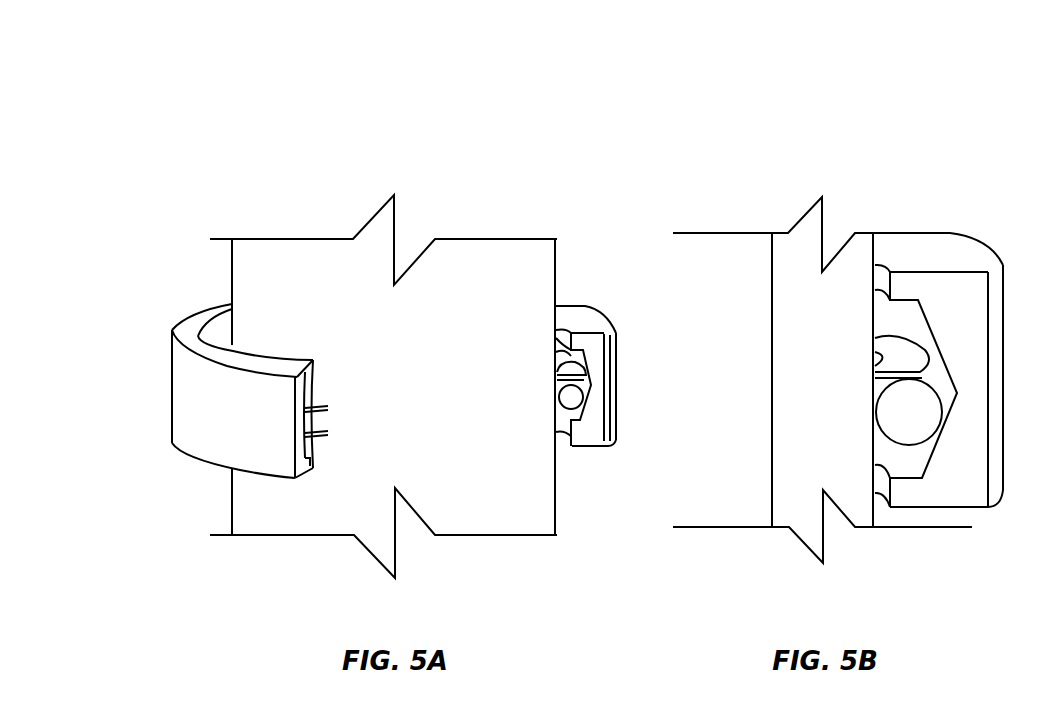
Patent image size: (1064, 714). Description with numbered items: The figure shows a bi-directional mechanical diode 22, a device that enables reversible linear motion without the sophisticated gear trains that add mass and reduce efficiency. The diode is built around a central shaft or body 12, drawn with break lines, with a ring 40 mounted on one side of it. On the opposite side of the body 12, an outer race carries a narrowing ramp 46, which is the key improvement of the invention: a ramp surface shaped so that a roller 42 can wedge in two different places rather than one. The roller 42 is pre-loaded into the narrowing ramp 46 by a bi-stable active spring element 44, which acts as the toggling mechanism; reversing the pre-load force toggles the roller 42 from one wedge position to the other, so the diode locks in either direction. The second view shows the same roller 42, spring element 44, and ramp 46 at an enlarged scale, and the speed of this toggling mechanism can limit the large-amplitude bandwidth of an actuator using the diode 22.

In FIG. 5A, the bi-directional mechanical diode 22 is at (230, 130).
In FIG. 5A, the body / shaft 12 is at (391, 386).
In FIG. 5A, the ring 40 is at (236, 447).
In FIG. 5A, the roller 42 is at (521, 424).
In FIG. 5B, the roller 42 is at (871, 431).
In FIG. 5A, the bi-stable active spring element 44 is at (565, 368).
In FIG. 5B, the bi-stable active spring element 44 is at (864, 375).
In FIG. 5A, the narrowing ramp 46 is at (617, 362).
In FIG. 5B, the narrowing ramp 46 is at (963, 370).